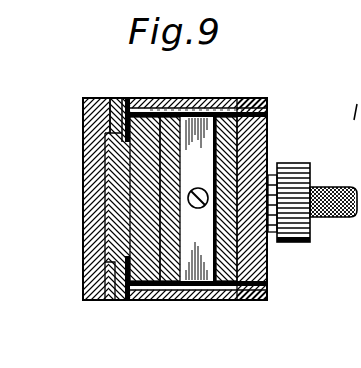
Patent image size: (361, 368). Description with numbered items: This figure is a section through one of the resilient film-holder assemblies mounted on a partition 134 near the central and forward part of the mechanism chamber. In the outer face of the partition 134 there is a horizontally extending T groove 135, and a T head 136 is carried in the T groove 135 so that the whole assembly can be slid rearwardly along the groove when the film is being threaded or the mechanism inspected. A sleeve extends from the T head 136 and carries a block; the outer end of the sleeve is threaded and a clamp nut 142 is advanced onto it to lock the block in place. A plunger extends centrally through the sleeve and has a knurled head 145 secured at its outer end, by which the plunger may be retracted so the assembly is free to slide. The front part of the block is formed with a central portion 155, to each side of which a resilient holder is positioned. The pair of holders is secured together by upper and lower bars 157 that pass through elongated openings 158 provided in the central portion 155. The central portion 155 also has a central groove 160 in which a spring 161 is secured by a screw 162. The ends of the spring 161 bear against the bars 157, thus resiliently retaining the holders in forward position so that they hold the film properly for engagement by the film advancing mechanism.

The partition 134 is at (93, 111).
The T groove 135 is at (110, 98).
The T head 136 is at (112, 157).
The clamp nut 142 is at (288, 243).
The knurled head 145 is at (330, 218).
The central portion 155 is at (220, 151).
The upper and lower bars 157 is at (189, 113).
The elongated openings 158 is at (232, 101).
The central groove 160 is at (264, 126).
The spring 161 is at (205, 112).
The screw 162 is at (211, 189).